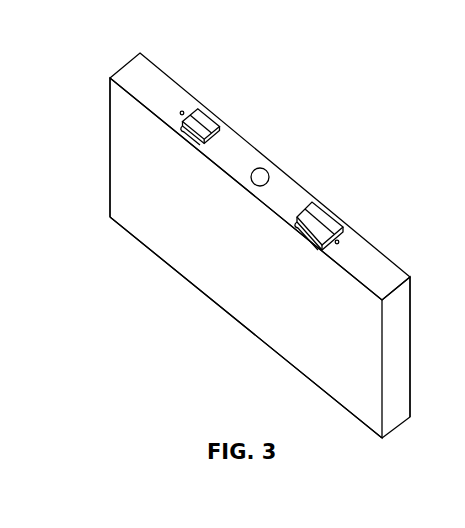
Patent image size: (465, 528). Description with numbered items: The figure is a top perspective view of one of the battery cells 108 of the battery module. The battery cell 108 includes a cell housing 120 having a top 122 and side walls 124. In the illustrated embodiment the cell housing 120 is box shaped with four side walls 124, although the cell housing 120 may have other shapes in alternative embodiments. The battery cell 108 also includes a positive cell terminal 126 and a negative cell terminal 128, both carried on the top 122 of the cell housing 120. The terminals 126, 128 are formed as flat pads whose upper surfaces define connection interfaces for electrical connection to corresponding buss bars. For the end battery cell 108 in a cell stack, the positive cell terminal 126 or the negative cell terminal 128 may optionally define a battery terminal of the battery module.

The battery cell 108 is at (325, 95).
The cell housing 120 is at (283, 277).
The top 122 is at (150, 75).
The side walls 124 is at (110, 155).
The positive cell terminal 126 is at (213, 122).
The negative cell terminal 128 is at (330, 213).